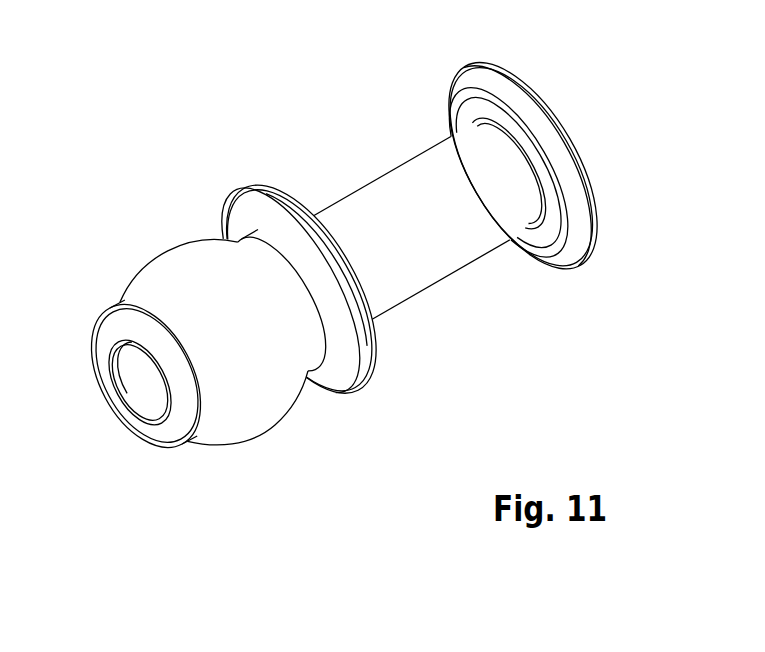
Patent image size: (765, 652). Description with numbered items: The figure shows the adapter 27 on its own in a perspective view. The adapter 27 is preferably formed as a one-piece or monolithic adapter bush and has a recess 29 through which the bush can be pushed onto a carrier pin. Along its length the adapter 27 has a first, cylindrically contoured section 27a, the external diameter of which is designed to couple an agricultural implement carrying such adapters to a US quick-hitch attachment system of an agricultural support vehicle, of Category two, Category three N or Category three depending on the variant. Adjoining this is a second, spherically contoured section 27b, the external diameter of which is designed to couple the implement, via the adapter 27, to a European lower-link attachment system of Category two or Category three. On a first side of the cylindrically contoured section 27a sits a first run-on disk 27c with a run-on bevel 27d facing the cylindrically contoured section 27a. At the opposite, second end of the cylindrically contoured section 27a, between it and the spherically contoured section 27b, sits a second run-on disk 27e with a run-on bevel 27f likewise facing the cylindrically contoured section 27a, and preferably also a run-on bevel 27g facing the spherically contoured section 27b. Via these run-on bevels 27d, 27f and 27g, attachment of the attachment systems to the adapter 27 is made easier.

The adapter 27 is at (199, 129).
The cylindrically contoured section 27a is at (401, 187).
The spherically contoured section 27b is at (167, 249).
The first run-on disk 27c is at (520, 78).
The run-on bevel 27d is at (566, 173).
The second run-on disk 27e is at (281, 192).
The run-on bevel 27f is at (379, 352).
The run-on bevel 27g is at (340, 367).
The recess 29 is at (149, 381).